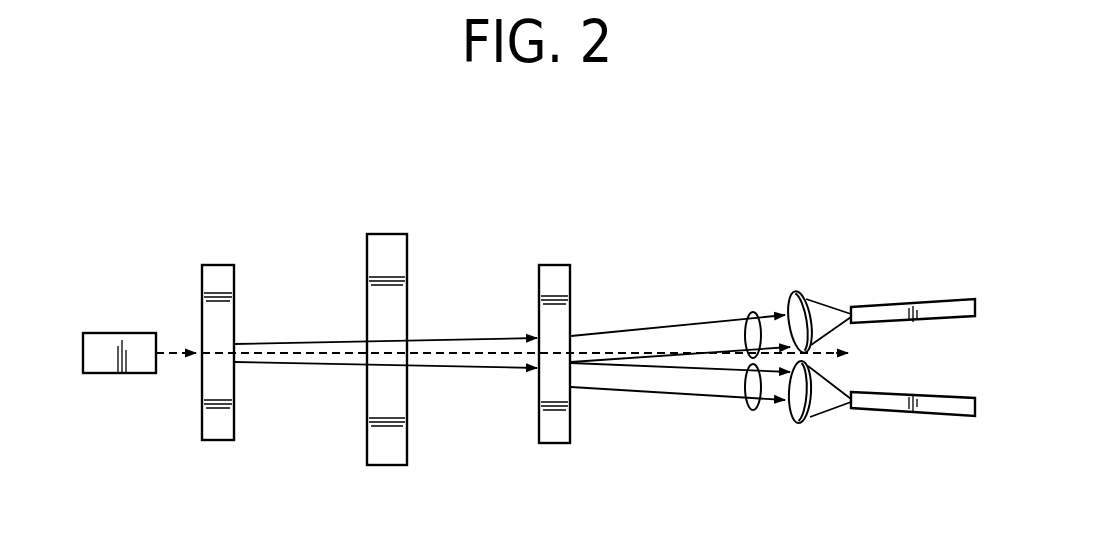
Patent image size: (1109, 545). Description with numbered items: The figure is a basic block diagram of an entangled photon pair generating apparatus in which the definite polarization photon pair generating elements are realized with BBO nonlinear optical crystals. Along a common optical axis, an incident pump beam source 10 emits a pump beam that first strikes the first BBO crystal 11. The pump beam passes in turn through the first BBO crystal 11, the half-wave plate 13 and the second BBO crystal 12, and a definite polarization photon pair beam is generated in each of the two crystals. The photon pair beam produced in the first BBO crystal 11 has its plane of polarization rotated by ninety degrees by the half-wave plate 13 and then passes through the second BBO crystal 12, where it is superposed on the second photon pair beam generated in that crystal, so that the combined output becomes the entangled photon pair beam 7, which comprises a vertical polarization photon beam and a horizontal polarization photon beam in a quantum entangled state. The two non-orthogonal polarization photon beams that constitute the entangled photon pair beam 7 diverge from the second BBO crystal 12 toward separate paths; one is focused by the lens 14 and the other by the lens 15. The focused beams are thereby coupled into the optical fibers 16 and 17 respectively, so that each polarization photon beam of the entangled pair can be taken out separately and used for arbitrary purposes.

The incident pump beam source 10 is at (122, 333).
The BBO 1 11 is at (219, 265).
The half-wave plate 13 is at (387, 234).
The BBO 2 12 is at (557, 265).
The entangled photon pair beam 7 is at (752, 312).
The lens 14 is at (795, 291).
The lens 15 is at (798, 423).
The optical fiber 16 is at (912, 304).
The optical fiber 17 is at (912, 413).